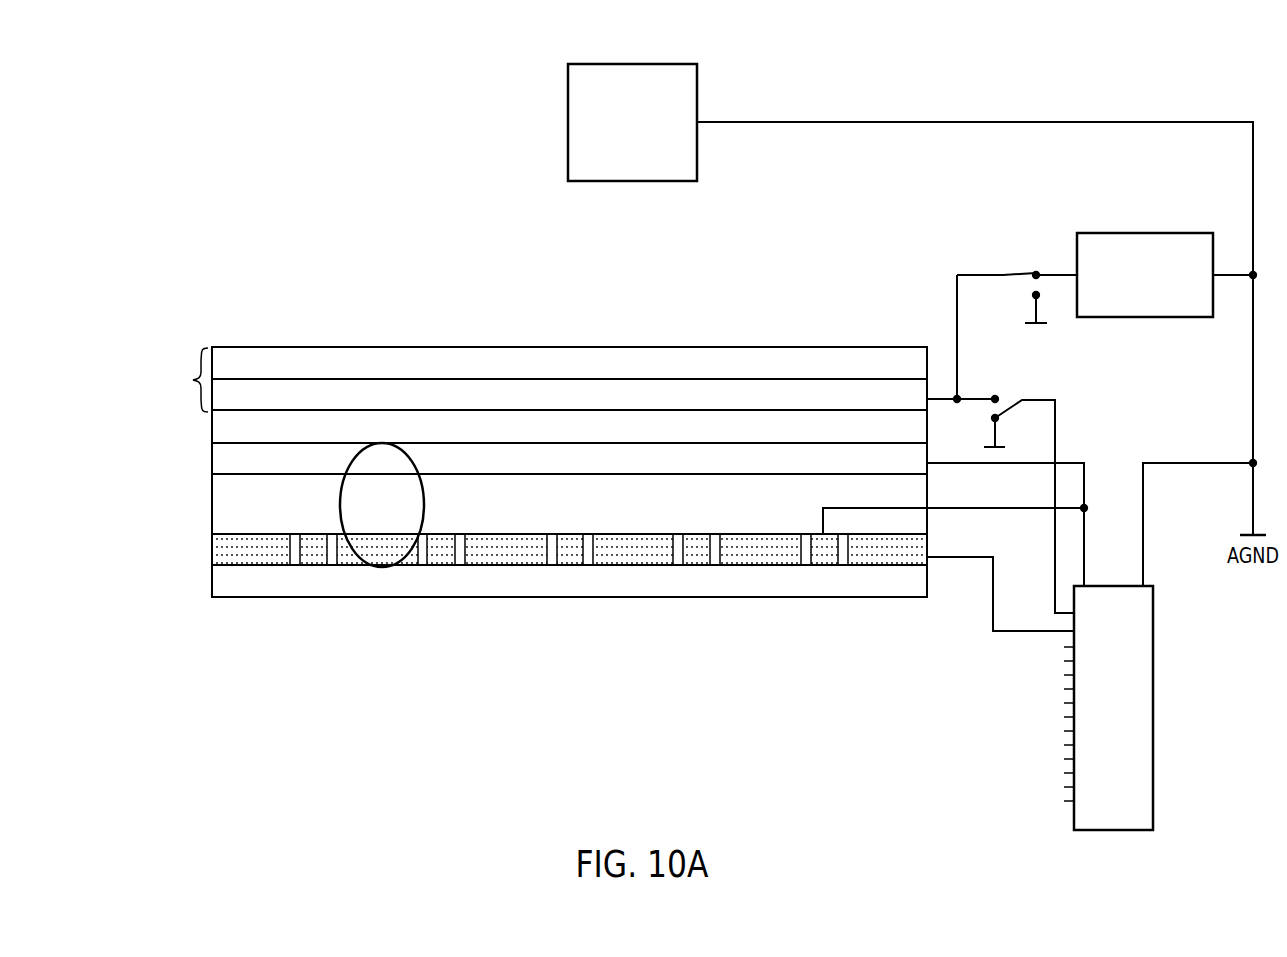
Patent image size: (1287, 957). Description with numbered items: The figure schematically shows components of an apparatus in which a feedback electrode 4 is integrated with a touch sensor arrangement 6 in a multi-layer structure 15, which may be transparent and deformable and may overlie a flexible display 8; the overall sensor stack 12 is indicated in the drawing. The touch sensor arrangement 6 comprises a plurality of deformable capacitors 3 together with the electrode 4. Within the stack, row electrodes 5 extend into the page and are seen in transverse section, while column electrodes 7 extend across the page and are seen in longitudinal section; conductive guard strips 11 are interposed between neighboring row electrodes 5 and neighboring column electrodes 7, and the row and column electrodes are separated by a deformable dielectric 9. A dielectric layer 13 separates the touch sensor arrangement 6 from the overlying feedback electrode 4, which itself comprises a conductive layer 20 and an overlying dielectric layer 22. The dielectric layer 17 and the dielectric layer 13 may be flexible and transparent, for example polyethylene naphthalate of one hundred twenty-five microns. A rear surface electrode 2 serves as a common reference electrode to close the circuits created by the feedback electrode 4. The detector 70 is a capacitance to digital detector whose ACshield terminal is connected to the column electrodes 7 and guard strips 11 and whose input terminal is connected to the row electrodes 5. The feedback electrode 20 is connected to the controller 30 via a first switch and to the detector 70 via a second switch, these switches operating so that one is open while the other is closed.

The rear surface electrode 2 is at (630, 181).
The deformable capacitor 3 is at (353, 455).
The feedback electrode 4 is at (547, 353).
The row electrode 5 is at (257, 553).
The touch sensor arrangement 6 is at (110, 548).
The column electrode 7 is at (212, 462).
The flexible display 8 is at (569, 609).
The deformable dielectric 9 is at (212, 507).
The conductive guard strip 11 is at (312, 553).
The sensor stack 12 is at (714, 338).
The dielectric layer 13 is at (212, 423).
The multi-layer structure 15 is at (1040, 507).
The dielectric layer 17 is at (226, 581).
The conductive layer 20 is at (477, 397).
The dielectric layer 22 is at (392, 363).
The controller 30 is at (1143, 234).
The detector 70 is at (1153, 704).